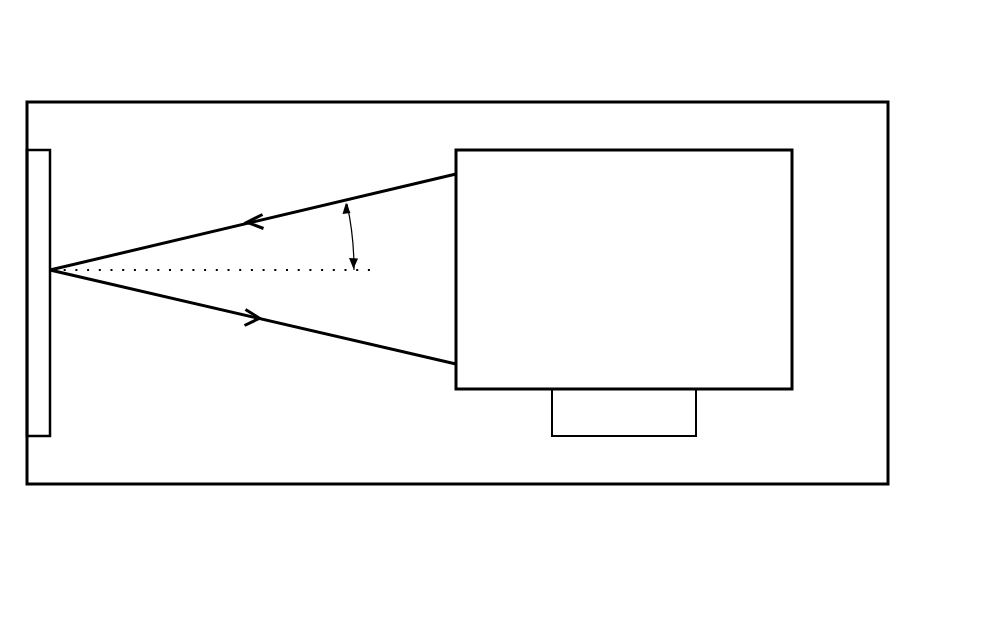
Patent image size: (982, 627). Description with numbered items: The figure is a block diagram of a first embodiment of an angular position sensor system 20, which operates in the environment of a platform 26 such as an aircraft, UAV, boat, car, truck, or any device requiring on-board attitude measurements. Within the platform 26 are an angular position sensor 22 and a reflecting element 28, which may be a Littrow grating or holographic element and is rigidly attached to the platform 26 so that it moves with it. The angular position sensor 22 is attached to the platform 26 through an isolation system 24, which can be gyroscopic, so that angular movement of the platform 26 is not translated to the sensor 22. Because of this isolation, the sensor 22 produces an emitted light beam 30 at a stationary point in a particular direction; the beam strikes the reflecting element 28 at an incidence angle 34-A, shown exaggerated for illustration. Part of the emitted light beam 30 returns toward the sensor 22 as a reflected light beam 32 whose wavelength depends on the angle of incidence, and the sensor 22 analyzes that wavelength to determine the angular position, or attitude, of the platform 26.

The angular position sensor system 20 is at (238, 62).
The angular position sensor 22 is at (689, 294).
The isolation system 24 is at (636, 428).
The platform 26 is at (481, 101).
The reflecting element 28 is at (52, 208).
The emitted light beam 30 is at (316, 205).
The reflected light beam 32 is at (355, 345).
The incidence angle 34-A is at (226, 237).